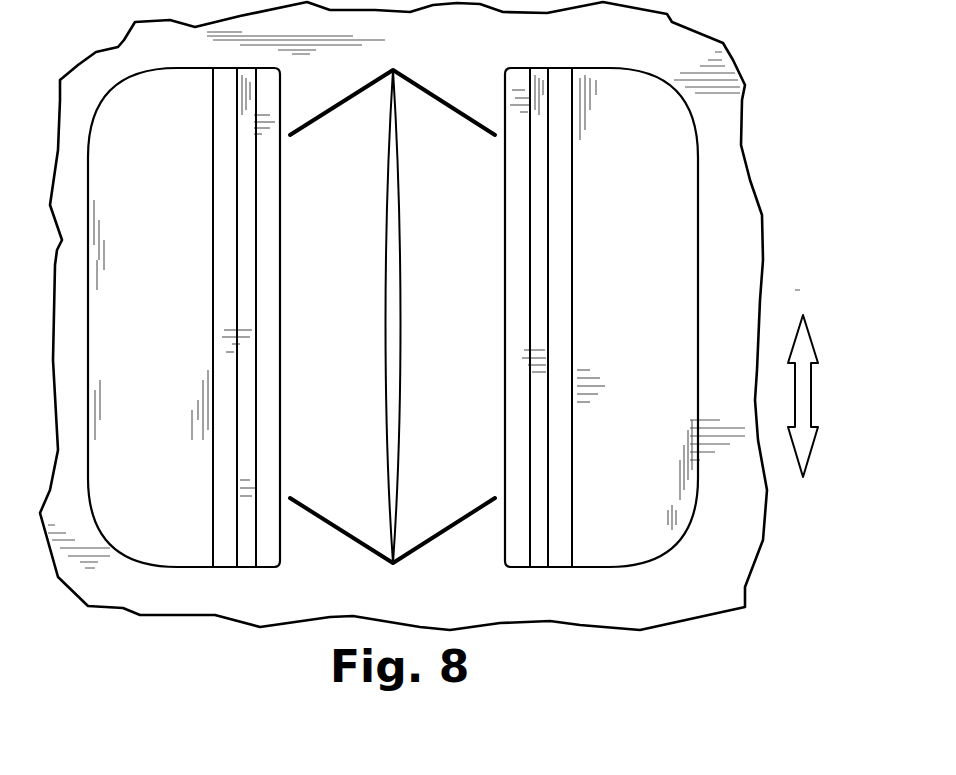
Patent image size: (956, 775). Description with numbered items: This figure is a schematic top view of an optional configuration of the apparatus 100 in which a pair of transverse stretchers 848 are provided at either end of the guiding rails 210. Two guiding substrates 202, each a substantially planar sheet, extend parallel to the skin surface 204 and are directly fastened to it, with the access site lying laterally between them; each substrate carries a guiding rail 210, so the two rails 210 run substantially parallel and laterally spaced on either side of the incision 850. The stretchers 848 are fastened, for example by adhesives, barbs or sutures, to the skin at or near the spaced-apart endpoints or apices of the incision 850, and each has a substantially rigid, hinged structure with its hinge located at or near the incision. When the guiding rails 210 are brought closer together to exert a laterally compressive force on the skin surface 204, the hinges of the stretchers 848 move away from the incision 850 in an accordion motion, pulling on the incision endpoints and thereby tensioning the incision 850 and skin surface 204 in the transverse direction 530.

The apparatus 100 is at (765, 108).
The guiding substrate 202 is at (175, 342).
The skin surface 204 is at (678, 594).
The guiding rail 210 is at (247, 560).
The transverse direction 530 is at (812, 397).
The transverse stretcher 848 is at (445, 100).
The incision 850 is at (394, 310).